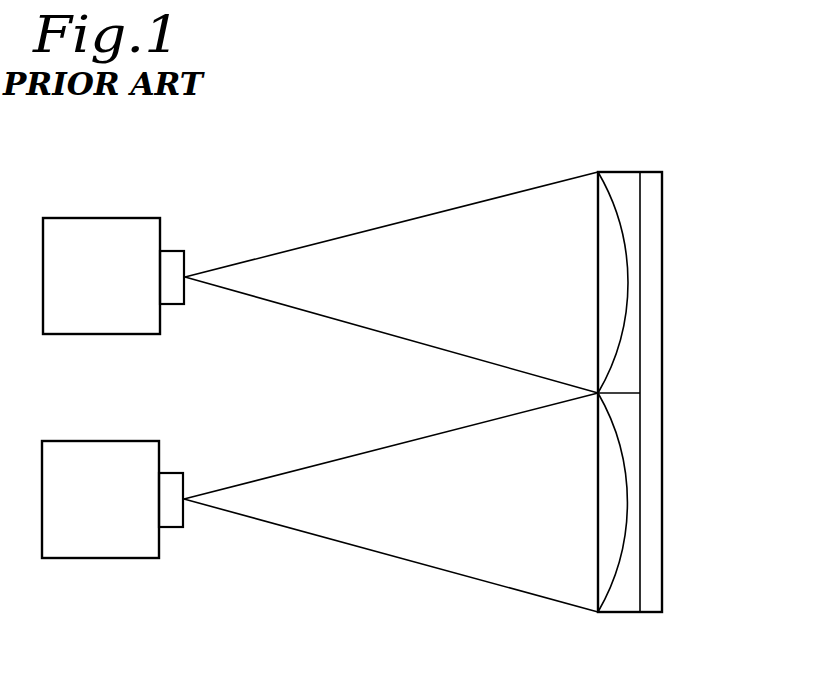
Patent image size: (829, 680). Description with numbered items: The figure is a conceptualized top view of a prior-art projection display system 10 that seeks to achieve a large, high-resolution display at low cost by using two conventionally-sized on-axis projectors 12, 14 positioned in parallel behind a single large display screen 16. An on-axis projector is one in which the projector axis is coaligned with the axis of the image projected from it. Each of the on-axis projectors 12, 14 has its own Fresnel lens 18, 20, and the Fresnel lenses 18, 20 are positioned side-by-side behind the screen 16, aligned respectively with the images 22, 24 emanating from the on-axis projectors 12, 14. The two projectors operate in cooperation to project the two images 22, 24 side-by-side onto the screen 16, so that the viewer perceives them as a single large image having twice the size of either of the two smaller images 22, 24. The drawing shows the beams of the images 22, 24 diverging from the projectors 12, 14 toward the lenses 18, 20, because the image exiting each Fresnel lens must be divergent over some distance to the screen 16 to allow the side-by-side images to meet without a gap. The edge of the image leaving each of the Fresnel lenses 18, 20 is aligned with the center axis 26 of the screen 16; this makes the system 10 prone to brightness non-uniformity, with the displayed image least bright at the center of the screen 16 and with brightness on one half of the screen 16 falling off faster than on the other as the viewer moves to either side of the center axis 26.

The projection display system 10 is at (248, 215).
The on-axis projector 12 is at (118, 292).
The on-axis projector 14 is at (117, 514).
The display screen 16 is at (657, 290).
The Fresnel lens 18 is at (613, 172).
The Fresnel lens 20 is at (620, 613).
The image 22 is at (463, 223).
The image 24 is at (460, 548).
The center axis 26 is at (627, 391).